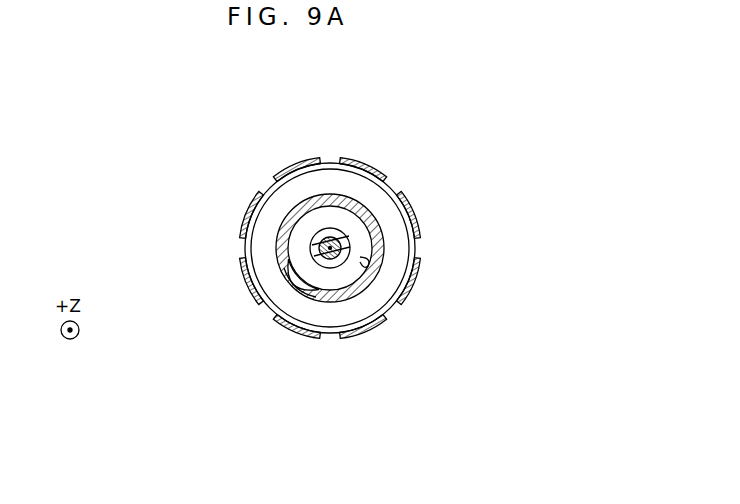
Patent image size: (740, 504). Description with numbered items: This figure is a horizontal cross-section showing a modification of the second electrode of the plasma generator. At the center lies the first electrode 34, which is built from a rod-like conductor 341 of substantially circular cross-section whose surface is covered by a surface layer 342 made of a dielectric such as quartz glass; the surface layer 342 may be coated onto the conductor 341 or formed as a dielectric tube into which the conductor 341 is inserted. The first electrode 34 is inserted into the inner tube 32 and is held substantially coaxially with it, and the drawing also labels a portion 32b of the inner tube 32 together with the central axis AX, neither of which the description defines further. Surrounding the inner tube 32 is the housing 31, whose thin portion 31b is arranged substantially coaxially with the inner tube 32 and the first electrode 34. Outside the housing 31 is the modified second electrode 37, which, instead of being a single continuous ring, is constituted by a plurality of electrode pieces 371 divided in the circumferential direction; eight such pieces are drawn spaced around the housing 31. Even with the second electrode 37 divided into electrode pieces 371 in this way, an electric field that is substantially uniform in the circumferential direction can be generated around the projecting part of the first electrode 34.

The second electrode 37 is at (167, 105).
The electrode piece 371 is at (287, 168).
The housing 31 is at (330, 213).
The thin portion 31b is at (330, 163).
The first electrode 34 is at (475, 110).
The conductor 341 is at (348, 236).
The surface layer 342 is at (345, 244).
The inner tube 32 is at (348, 262).
The shaft end portion 32b is at (368, 268).
The rotation axis AX is at (330, 249).